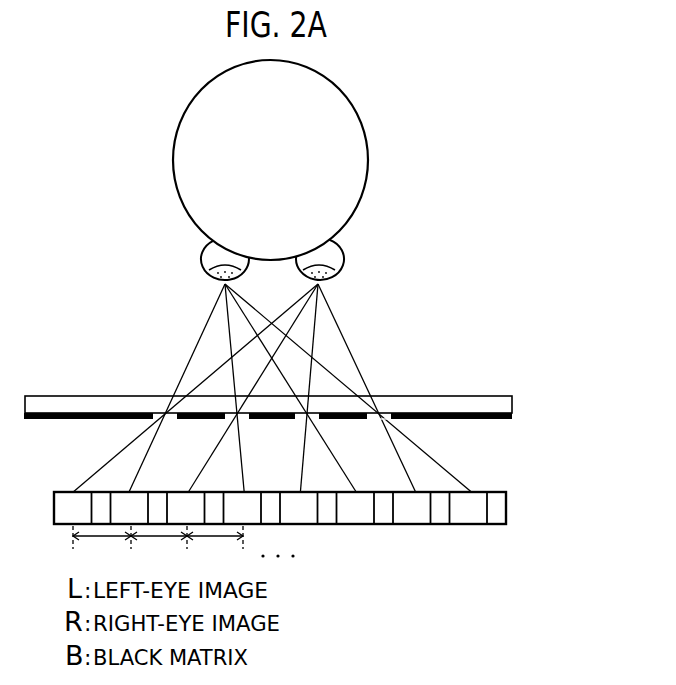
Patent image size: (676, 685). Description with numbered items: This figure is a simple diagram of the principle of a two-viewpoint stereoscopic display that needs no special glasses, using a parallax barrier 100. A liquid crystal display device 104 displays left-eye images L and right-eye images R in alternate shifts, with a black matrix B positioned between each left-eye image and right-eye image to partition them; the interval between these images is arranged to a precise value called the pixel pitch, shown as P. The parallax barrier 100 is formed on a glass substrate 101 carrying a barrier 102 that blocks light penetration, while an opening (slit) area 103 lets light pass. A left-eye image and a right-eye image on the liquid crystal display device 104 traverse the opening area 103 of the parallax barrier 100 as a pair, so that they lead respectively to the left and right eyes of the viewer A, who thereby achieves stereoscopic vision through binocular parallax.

The viewer A is at (369, 176).
The parallax barrier 100 is at (299, 405).
The glass substrate 101 is at (53, 403).
The barrier 102 is at (440, 421).
The opening (slit) area 103 is at (386, 395).
The liquid crystal display device 104 is at (500, 525).
The pixel pitch P is at (184, 547).